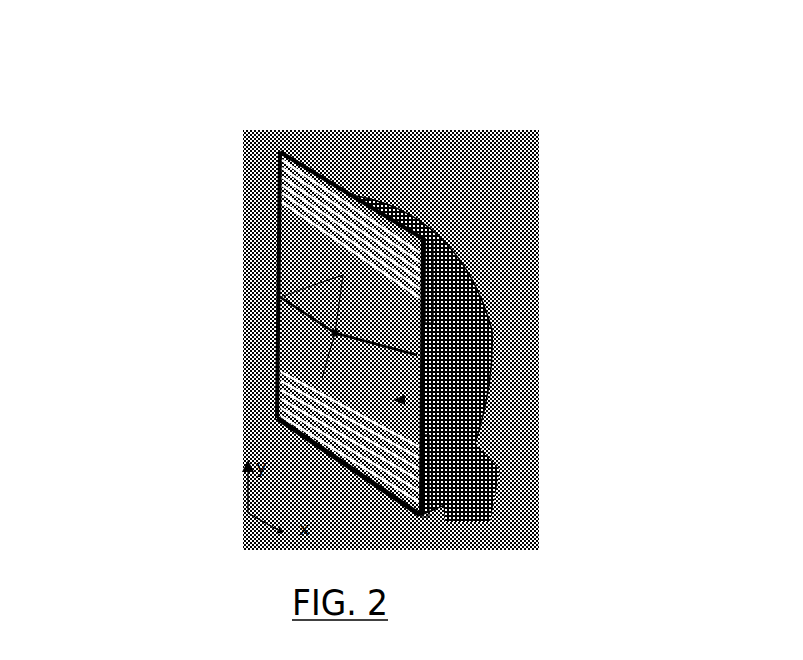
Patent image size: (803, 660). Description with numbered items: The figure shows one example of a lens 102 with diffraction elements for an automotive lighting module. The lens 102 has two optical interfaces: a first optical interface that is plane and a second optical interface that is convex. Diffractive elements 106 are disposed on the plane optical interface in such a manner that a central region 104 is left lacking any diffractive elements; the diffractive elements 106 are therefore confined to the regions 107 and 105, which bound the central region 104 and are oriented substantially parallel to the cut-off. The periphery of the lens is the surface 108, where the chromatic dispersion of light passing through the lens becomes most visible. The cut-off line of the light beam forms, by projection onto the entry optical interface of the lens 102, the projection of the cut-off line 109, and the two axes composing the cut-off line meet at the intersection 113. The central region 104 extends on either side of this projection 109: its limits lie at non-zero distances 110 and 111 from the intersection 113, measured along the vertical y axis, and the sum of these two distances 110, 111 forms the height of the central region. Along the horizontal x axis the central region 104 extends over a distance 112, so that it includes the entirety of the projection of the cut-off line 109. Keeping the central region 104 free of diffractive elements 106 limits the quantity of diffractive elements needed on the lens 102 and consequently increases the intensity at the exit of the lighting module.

The lens 102 is at (473, 455).
The central region 104 is at (405, 400).
The region 105 is at (477, 278).
The diffractive elements 106 is at (280, 237).
The region 107 is at (465, 515).
The surface 108 is at (357, 190).
The projection of the cut-off line 109 is at (418, 372).
The distance 110 is at (343, 275).
The distance 111 is at (335, 333).
The distance 112 is at (277, 392).
The intersection 113 is at (422, 323).